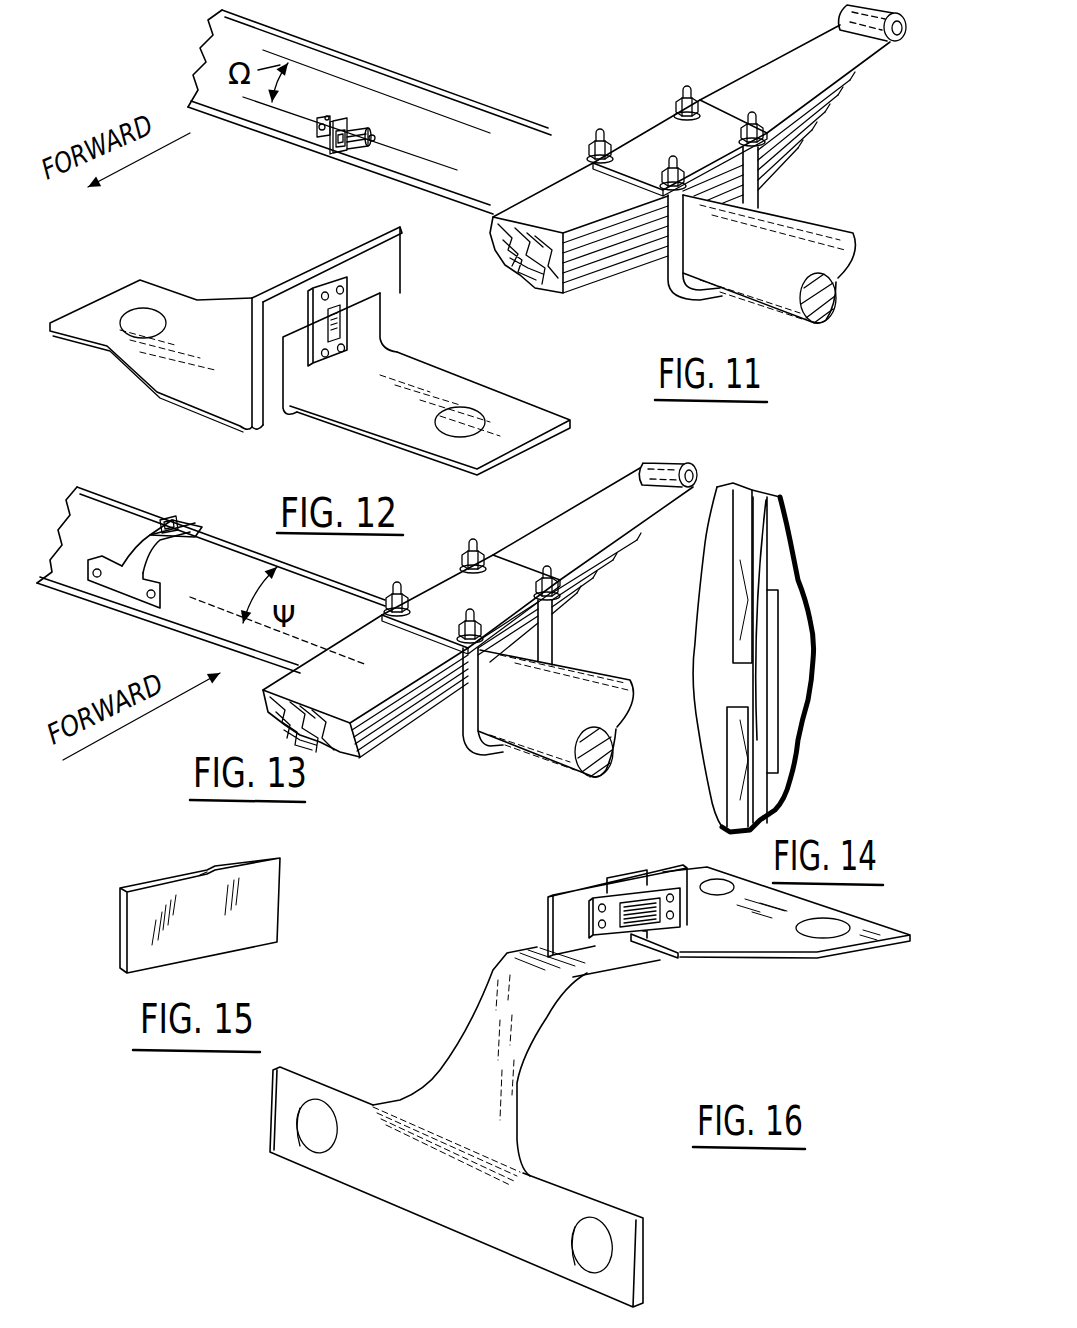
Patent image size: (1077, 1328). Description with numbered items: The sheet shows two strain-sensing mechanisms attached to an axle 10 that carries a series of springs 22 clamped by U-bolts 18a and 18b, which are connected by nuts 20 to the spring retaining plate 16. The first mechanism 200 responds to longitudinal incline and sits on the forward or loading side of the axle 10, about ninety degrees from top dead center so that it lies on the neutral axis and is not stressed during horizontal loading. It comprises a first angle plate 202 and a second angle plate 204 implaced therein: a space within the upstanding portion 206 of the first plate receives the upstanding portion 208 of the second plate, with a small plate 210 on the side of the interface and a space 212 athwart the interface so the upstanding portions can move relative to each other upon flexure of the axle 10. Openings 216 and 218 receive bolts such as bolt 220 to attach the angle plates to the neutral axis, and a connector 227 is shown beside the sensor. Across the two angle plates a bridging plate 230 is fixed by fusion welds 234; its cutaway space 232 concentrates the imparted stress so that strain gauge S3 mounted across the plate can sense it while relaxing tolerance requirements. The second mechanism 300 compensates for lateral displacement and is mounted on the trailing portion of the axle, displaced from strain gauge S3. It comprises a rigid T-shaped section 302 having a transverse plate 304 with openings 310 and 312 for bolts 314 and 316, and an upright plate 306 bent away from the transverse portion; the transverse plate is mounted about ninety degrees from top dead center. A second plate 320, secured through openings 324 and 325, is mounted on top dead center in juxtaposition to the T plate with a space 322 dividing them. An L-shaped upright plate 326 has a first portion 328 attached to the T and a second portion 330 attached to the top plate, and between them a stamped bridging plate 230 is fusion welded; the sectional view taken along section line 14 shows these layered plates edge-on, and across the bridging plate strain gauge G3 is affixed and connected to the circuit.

In FIG. 11, the axle 10 is at (420, 67).
In FIG. 13, the axle 10 is at (371, 590).
In FIG. 11, the section line 14— 14 is at (259, 160).
In FIG. 16, the section line 14— 14 is at (570, 813).
In FIG. 11, the retaining plate 16 is at (663, 110).
In FIG. 13, the retaining plate 16 is at (494, 597).
In FIG. 11, the U-bolt 18a is at (688, 284).
In FIG. 13, the U-bolt 18a is at (478, 742).
In FIG. 11, the U-bolt 18b is at (600, 132).
In FIG. 13, the U-bolt 18b is at (475, 546).
In FIG. 11, the nuts 20 is at (763, 124).
In FIG. 13, the nuts 20 is at (557, 575).
In FIG. 11, the springs 22 is at (600, 268).
In FIG. 13, the springs 22 is at (388, 720).
In FIG. 11, the mechanism 200 is at (351, 172).
In FIG. 12, the mechanism 200 is at (326, 255).
In FIG. 12, the first angle plate 202 is at (205, 299).
In FIG. 12, the second angle plate 204 is at (383, 440).
In FIG. 12, the upstanding portion of angle plate 202 206 is at (268, 292).
In FIG. 12, the upstanding portion of angle plate 204 208 is at (303, 385).
In FIG. 12, the small plate 210 is at (382, 334).
In FIG. 12, the space 212 is at (326, 327).
In FIG. 12, the opening 216 is at (167, 327).
In FIG. 12, the opening 218 is at (458, 414).
In FIG. 11, the bolt 220 is at (330, 111).
In FIG. 11, the connector 227 is at (375, 147).
In FIG. 12, the bridging plate 230 is at (344, 289).
In FIG. 14, the bridging plate 230 is at (767, 548).
In FIG. 15, the bridging plate 230 is at (260, 858).
In FIG. 16, the bridging plate 230 is at (612, 899).
In FIG. 15, the space or cutaway portion 232 is at (207, 870).
In FIG. 12, the fusion welds 234 is at (325, 292).
In FIG. 13, the mechanism 300 is at (186, 555).
In FIG. 16, the mechanism 300 is at (470, 1127).
In FIG. 16, the T-shaped section 302 is at (470, 1127).
In FIG. 16, the transverse plate 304 is at (547, 1173).
In FIG. 16, the upright plate 306 is at (578, 995).
In FIG. 16, the opening 310 is at (322, 1112).
In FIG. 16, the opening 312 is at (600, 1225).
In FIG. 13, the bolt 314 is at (93, 568).
In FIG. 13, the bolt 316 is at (158, 592).
In FIG. 16, the second plate 320 is at (773, 957).
In FIG. 16, the space 322 is at (678, 957).
In FIG. 16, the opening 324 is at (843, 933).
In FIG. 16, the opening 325 is at (720, 887).
In FIG. 16, the L-shaped upright plate 326 is at (585, 890).
In FIG. 14, the first portion of L-shaped plate 328 is at (743, 493).
In FIG. 16, the first portion of L-shaped plate 328 is at (550, 907).
In FIG. 14, the second portion of L-shaped plate 330 is at (740, 773).
In FIG. 16, the second portion of L-shaped plate 330 is at (657, 883).
In FIG. 11, the strain gauge S3 is at (348, 128).
In FIG. 12, the strain gauge S3 is at (342, 324).
In FIG. 13, the strain gauge G3 is at (174, 515).
In FIG. 14, the strain gauge G3 is at (773, 657).
In FIG. 16, the strain gauge G3 is at (667, 890).